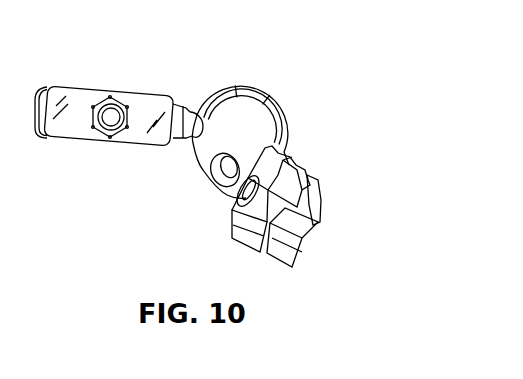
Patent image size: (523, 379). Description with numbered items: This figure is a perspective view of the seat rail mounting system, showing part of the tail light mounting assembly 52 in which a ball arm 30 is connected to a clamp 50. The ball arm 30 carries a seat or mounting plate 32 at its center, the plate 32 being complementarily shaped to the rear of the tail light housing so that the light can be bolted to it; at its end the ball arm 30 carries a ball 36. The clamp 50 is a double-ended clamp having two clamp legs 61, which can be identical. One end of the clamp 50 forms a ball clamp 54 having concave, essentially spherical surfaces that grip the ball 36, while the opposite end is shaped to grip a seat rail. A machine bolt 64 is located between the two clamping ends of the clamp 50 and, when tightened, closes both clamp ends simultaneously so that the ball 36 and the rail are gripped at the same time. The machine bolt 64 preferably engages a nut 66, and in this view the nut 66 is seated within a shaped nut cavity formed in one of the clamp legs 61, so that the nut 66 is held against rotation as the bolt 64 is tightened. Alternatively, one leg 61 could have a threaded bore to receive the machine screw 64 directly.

The ball arm 30 is at (178, 168).
The seat or mounting plate 32 is at (273, 127).
The ball 36 is at (293, 170).
The clamp 50 is at (66, 72).
The tail light mounting assembly 52 is at (275, 62).
The ball clamp 54 is at (168, 93).
The clamp leg 61 is at (67, 122).
The machine bolt 64 is at (113, 115).
The nut 66 is at (107, 102).